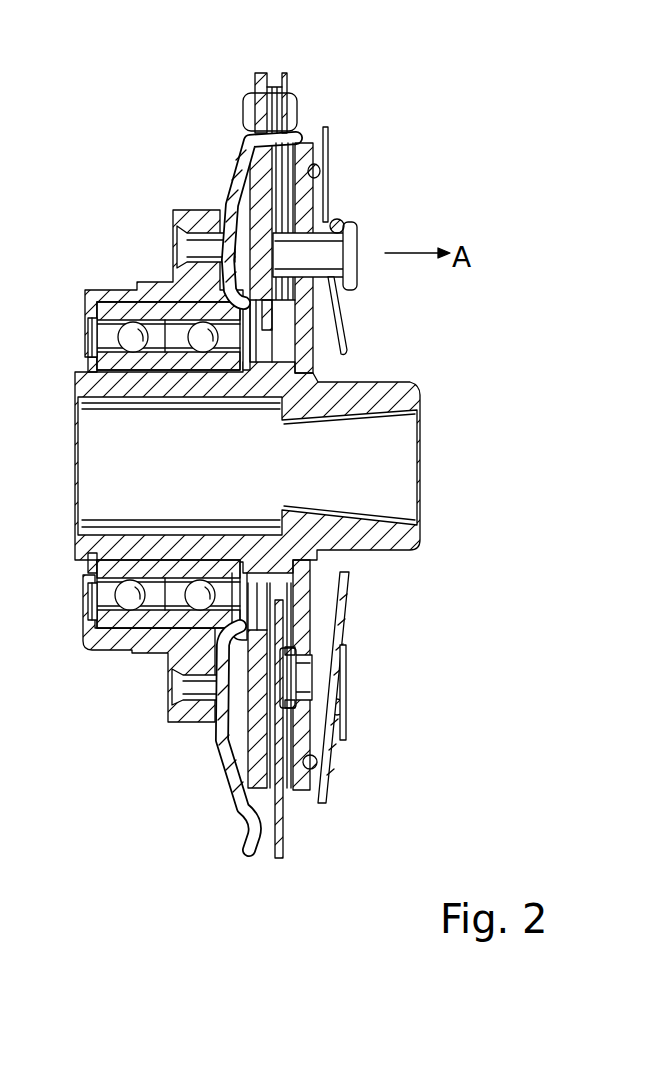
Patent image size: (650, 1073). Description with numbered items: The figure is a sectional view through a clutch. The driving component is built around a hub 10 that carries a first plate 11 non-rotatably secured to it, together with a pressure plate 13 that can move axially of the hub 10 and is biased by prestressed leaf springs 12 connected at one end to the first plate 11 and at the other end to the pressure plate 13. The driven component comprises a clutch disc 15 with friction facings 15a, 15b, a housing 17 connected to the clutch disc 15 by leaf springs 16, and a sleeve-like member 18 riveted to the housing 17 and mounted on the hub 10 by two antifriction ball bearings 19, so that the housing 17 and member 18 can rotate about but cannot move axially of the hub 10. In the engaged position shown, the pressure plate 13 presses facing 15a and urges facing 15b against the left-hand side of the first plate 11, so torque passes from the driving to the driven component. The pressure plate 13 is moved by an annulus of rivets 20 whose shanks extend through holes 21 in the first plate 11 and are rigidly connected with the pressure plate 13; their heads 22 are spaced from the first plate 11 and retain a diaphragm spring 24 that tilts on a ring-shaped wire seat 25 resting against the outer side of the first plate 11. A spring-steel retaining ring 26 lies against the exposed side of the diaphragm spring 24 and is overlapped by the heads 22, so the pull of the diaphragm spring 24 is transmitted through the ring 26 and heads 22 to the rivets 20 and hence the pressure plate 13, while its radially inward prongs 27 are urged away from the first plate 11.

The hub 10 is at (408, 535).
The first plate 11 is at (298, 793).
The leaf spring 12 is at (286, 648).
The pressure plate 13 is at (257, 738).
The clutch disc 15 is at (287, 75).
The friction facing 15a is at (263, 808).
The friction facing 15b is at (297, 798).
The leaf spring 16 is at (273, 80).
The housing 17 is at (243, 140).
The sleeve-like member 18 is at (88, 292).
The antifriction ball bearing 19 is at (90, 327).
The rivet 20 is at (341, 260).
The hole 21 is at (311, 207).
The head 22 is at (354, 277).
The diaphragm spring 24 is at (323, 783).
The ring-shaped seat 25 is at (328, 163).
The retaining ring 26 is at (343, 218).
The prong 27 is at (349, 573).